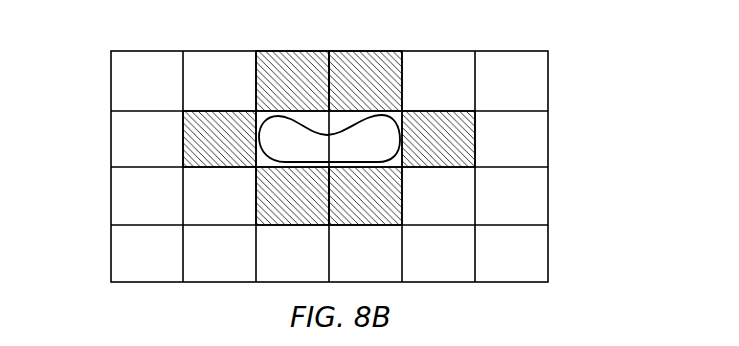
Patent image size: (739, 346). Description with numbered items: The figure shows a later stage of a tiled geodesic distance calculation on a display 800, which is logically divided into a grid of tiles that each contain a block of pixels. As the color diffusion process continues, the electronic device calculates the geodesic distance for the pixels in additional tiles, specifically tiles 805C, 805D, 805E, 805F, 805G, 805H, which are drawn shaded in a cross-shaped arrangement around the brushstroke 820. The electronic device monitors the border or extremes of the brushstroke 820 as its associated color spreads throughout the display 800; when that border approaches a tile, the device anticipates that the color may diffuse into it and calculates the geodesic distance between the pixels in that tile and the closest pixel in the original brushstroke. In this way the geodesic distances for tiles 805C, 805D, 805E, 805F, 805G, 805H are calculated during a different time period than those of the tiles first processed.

The display 800 is at (583, 91).
The tile 805C is at (266, 77).
The tile 805D is at (378, 77).
The tile 805E is at (457, 146).
The tile 805F is at (378, 207).
The tile 805G is at (272, 207).
The tile 805H is at (197, 140).
The brushstroke 820 is at (355, 124).